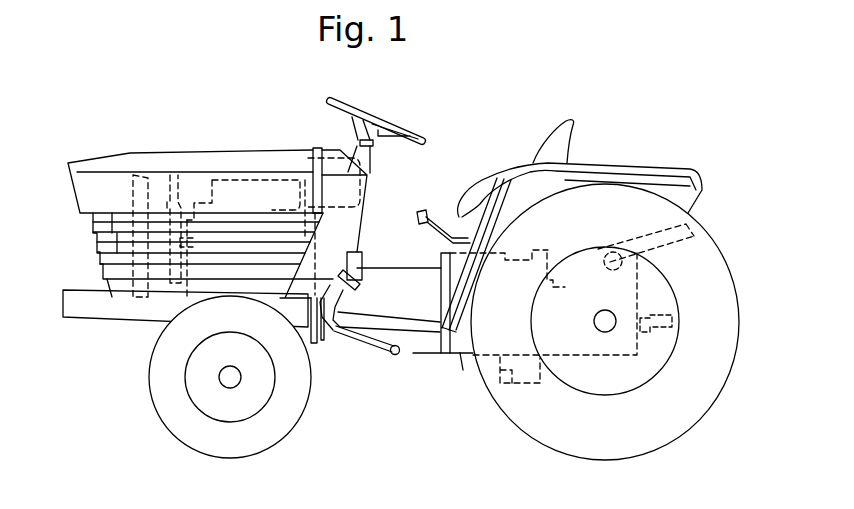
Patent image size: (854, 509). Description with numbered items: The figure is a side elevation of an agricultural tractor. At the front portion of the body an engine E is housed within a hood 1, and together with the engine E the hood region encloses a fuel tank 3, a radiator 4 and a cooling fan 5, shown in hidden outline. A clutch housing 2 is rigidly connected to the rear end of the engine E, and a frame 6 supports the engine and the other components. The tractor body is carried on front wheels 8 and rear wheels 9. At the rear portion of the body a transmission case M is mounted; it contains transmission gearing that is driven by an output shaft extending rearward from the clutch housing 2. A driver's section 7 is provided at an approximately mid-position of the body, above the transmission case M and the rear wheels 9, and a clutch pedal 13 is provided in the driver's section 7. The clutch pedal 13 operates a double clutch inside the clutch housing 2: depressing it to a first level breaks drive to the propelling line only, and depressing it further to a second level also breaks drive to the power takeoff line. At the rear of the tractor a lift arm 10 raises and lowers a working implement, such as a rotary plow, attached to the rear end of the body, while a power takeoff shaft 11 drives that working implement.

The hood 1 is at (90, 161).
The clutch housing 2 is at (331, 336).
The fuel tank 3 is at (306, 150).
The radiator 4 is at (137, 170).
The cooling fan 5 is at (172, 170).
The engine E is at (236, 178).
The frame 6 is at (137, 312).
The driver's section 7 is at (498, 122).
The front wheels 8 is at (160, 420).
The rear wheels 9 is at (687, 416).
The lift arm 10 is at (645, 238).
The power takeoff shaft 11 is at (658, 332).
The clutch pedal 13 is at (352, 272).
The transmission case M is at (462, 360).